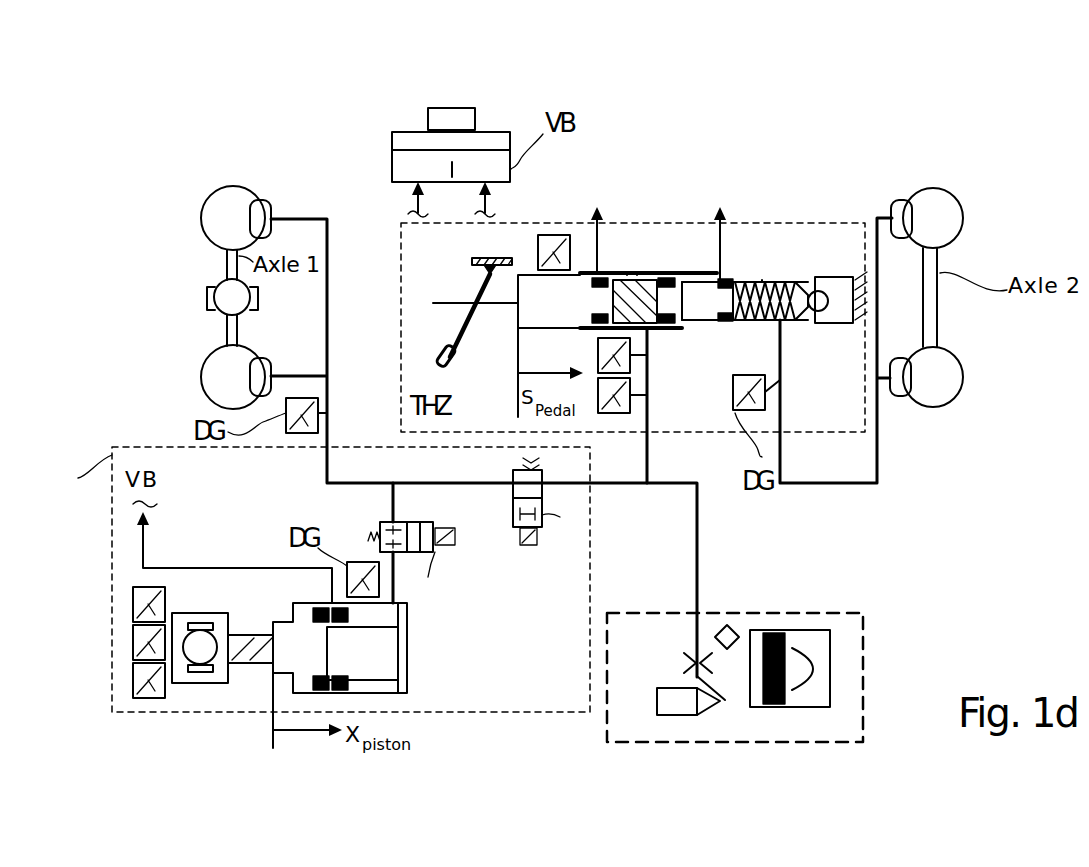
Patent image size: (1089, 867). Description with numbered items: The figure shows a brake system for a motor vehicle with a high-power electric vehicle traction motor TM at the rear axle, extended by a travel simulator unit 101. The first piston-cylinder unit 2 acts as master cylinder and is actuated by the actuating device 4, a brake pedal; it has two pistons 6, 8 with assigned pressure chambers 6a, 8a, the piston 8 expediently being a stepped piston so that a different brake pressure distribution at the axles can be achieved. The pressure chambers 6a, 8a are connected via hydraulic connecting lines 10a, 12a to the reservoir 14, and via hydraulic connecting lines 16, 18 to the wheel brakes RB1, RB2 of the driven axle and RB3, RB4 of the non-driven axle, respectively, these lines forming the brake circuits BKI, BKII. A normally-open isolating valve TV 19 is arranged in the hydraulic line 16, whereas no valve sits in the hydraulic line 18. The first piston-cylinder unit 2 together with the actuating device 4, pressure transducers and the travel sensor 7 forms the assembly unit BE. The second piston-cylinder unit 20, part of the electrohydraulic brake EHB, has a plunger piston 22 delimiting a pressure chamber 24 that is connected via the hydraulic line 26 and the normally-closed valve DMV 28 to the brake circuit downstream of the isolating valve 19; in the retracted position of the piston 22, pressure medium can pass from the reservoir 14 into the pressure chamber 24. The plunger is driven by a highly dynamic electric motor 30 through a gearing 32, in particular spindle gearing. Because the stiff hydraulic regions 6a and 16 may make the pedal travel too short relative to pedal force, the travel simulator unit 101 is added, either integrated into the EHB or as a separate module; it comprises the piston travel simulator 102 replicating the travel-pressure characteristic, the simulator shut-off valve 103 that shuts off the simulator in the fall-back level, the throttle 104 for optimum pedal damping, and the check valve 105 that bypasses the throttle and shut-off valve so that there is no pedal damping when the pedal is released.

The first piston-cylinder unit 2 is at (699, 269).
The actuating device 4 is at (471, 349).
The piston 6 is at (574, 273).
The pressure chamber 6a is at (637, 272).
The travel sensor 7 is at (545, 235).
The piston 8 is at (685, 307).
The pressure chamber 8a is at (760, 278).
The hydraulic connecting line 10a is at (627, 273).
The hydraulic connecting line 12a is at (763, 278).
The reservoir 14 is at (512, 133).
The hydraulic connecting line 16 is at (650, 470).
The hydraulic connecting line 18 is at (878, 476).
The isolating valve 19 is at (530, 546).
The second piston-cylinder unit 20 is at (330, 660).
The plunger piston 22 is at (285, 670).
The pressure chamber 24 is at (408, 670).
The hydraulic line 26 is at (395, 593).
The valve 28 is at (373, 527).
The electric motor 30 is at (183, 667).
The gearing 32 is at (236, 667).
The travel simulator unit 101 is at (774, 706).
The piston travel simulator 102 is at (832, 660).
The simulator shut-off valve 103 is at (657, 717).
The throttle 104 is at (690, 658).
The check valve 105 is at (728, 624).
The wheel brake RB1 is at (262, 198).
The wheel brake RB2 is at (297, 341).
The wheel brake RB3 is at (898, 200).
The wheel brake RB4 is at (900, 396).
The electric vehicle traction motor TM is at (203, 292).
The brake circuit BKI is at (328, 312).
The brake circuit BKII is at (833, 485).
The assembly unit BE is at (835, 222).
The electrohydraulic brake EHB is at (68, 474).
The valve DMV is at (456, 581).
The isolating valve TV is at (565, 518).